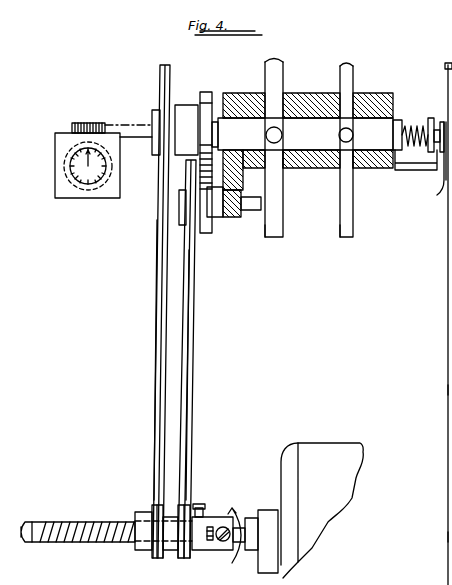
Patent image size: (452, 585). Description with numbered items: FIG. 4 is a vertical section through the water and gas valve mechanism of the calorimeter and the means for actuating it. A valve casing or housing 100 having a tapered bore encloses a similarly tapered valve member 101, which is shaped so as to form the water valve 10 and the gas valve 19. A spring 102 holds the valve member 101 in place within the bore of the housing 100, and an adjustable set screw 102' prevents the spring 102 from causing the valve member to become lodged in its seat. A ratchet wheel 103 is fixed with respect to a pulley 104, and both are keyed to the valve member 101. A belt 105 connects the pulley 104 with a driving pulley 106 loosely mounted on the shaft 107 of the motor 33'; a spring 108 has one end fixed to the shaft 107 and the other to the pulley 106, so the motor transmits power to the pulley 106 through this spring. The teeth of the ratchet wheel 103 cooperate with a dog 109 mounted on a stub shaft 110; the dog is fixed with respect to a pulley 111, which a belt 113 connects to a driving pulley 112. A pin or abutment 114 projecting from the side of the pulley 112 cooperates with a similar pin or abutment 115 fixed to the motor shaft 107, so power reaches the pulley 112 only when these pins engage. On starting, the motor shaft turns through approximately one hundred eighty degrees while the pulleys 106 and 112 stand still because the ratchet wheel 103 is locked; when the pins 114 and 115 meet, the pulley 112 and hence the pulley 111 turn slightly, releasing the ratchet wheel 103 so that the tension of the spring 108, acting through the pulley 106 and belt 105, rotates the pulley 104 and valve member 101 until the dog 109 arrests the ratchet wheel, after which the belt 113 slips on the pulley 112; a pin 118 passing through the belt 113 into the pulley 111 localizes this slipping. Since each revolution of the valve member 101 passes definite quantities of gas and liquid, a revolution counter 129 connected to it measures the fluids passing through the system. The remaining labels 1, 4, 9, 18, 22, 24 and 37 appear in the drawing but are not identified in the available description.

The frame 1 is at (447, 300).
The frame member 4 is at (447, 537).
The shaft 9 is at (266, 72).
The water valve 10 is at (291, 183).
The shaft 18 is at (352, 72).
The gas valve 19 is at (359, 183).
The lever 22 is at (340, 232).
The lever 24 is at (270, 235).
The motor 33' is at (310, 498).
The frame bar 37 is at (447, 390).
The valve casing or housing 100 is at (372, 103).
The valve member 101 is at (293, 120).
The spring 102 is at (418, 132).
The adjustable set screw 102' is at (424, 166).
The ratchet wheel 103 is at (205, 91).
The pulley 104 is at (159, 74).
The belt 105 is at (159, 342).
The driving pulley 106 is at (150, 555).
The shaft 107 is at (38, 523).
The spring 108 is at (85, 525).
The dog 109 is at (210, 236).
The stub shaft 110 is at (233, 207).
The pulley 111 is at (182, 228).
The driving pulley 112 is at (180, 558).
The belt 113 is at (190, 332).
The pin or abutment 114 is at (205, 516).
The pin or abutment 115 is at (198, 508).
The pin 118 is at (193, 172).
The revolution counter 129 is at (55, 153).